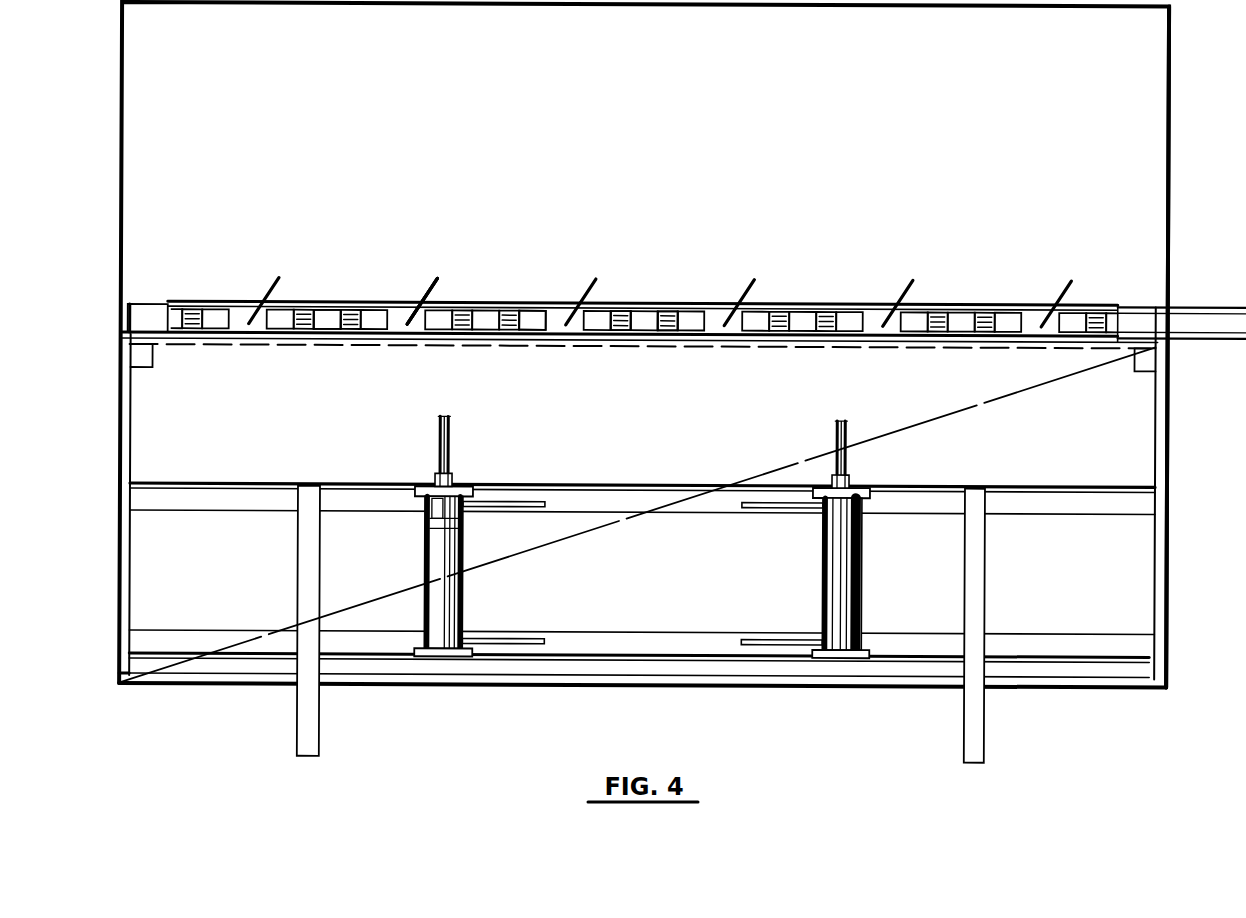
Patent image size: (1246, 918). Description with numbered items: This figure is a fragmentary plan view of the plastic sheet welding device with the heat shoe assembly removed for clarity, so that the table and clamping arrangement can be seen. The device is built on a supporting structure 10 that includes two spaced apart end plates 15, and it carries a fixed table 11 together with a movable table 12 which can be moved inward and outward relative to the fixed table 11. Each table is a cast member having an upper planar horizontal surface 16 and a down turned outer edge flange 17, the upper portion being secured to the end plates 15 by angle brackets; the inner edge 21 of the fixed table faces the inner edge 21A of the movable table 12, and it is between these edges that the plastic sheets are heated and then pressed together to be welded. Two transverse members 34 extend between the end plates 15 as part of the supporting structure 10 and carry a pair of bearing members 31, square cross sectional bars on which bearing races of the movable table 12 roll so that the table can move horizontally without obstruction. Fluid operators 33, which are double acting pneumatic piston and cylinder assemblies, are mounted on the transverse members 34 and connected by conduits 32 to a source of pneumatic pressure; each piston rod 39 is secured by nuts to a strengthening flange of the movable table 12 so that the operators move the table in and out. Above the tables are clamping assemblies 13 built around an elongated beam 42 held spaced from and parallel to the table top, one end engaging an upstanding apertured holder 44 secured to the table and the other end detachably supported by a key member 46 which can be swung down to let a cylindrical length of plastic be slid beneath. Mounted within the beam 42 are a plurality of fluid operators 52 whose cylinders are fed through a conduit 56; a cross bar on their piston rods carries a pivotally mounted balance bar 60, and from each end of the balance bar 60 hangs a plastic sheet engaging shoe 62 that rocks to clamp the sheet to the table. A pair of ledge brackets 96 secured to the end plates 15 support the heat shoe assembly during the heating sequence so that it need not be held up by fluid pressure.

The supporting structure 10 is at (632, 456).
The fixed table 11 is at (972, 162).
The movable table 12 is at (930, 421).
The clamping assemblies 13 is at (635, 298).
The end plates 15 is at (132, 568).
The upper planar horizontal surface 16 is at (944, 228).
The down turned outer edge flange 17 is at (585, 684).
The inner edge 21 is at (541, 338).
The inner edge of movable table 21A is at (627, 346).
The bearing members 31 is at (316, 573).
The conduits 32 is at (532, 503).
The fluid operators 33 is at (440, 597).
The transverse members 34 is at (577, 493).
The piston rod 39 is at (449, 423).
The elongated beam 42 is at (331, 327).
The upstanding apertured holder 44 is at (1140, 307).
The key member 46 is at (141, 317).
The fluid operators 52 is at (396, 318).
The conduit 56 is at (425, 286).
The balance bar 60 is at (532, 320).
The plastic sheet engaging shoe 62 is at (664, 320).
The ledge brackets 96 is at (144, 357).